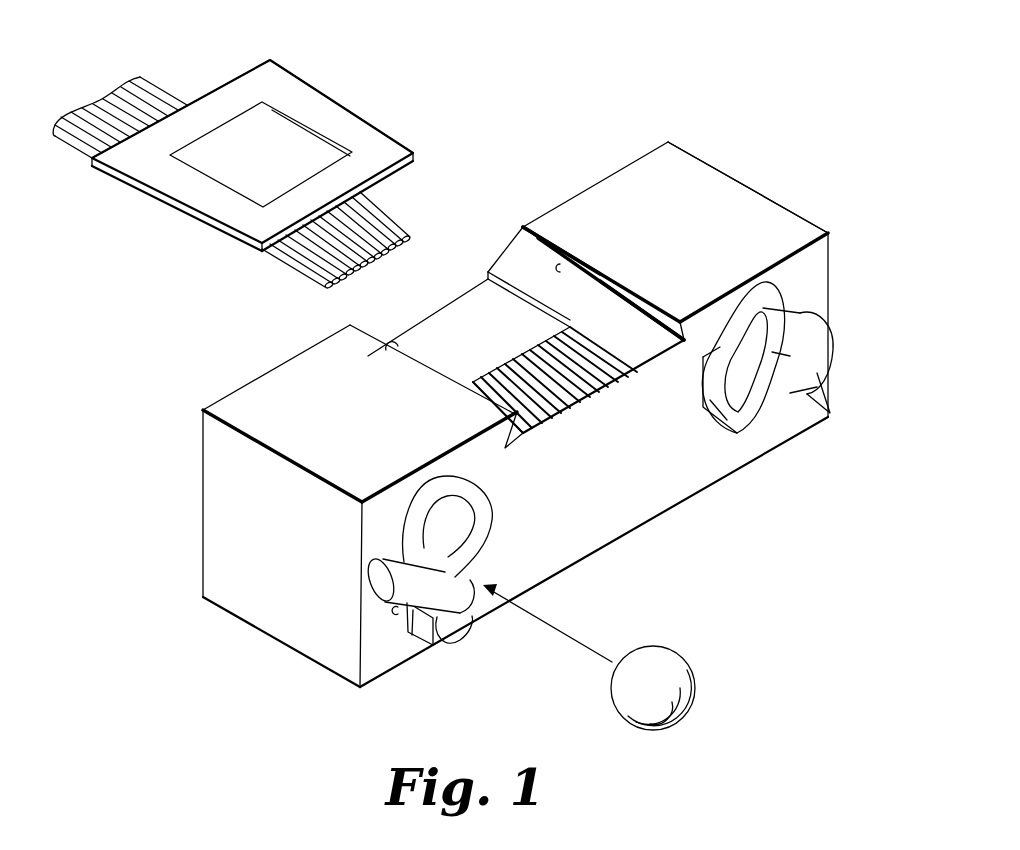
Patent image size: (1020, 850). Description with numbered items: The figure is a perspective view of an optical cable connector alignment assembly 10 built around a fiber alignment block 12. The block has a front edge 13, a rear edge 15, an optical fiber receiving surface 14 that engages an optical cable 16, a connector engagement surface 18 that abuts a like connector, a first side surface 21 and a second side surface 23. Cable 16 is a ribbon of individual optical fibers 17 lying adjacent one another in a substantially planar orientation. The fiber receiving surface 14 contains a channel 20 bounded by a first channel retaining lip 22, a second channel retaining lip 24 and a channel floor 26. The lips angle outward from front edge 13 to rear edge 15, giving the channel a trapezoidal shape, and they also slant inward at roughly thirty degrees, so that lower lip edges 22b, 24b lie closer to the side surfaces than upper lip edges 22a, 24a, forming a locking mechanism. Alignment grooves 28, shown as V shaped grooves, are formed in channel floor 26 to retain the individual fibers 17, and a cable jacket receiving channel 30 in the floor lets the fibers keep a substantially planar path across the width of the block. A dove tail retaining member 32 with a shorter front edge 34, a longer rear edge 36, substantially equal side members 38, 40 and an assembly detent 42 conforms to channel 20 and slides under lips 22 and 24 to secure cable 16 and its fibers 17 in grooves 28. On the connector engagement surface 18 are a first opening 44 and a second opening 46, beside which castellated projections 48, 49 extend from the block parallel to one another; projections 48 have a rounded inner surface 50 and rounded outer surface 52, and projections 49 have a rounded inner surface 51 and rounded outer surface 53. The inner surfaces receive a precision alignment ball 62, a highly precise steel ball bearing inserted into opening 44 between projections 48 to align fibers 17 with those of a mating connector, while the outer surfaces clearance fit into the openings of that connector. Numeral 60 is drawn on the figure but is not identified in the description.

The optical cable connector alignment assembly 10 is at (670, 70).
The fiber alignment block 12 is at (625, 421).
The front edge 13 is at (818, 262).
The optical fiber receiving surface 14 is at (391, 506).
The rear edge 15 is at (607, 177).
The optical cable 16 is at (150, 87).
The individual optical fibers 17 is at (408, 245).
The connector engagement surface 18 is at (643, 498).
The channel 20 is at (514, 256).
The first side surface 21 is at (255, 603).
The first channel retaining lip 22 is at (610, 292).
The upper lip edge 22a is at (648, 298).
The lower lip edge 22b is at (561, 270).
The second side surface 23 is at (800, 213).
The second channel retaining lip 24 is at (366, 358).
The upper lip edge 24a is at (420, 365).
The lower lip edge 24b is at (522, 430).
The channel floor 26 is at (535, 277).
The alignment grooves 28 is at (594, 366).
The cable jacket receiving channel 30 is at (497, 334).
The dove tail retaining member 32 is at (265, 146).
The front edge 34 is at (404, 172).
The rear edge 36 is at (208, 82).
The side member 38 is at (190, 212).
The side member 40 is at (347, 108).
The assembly detent 42 is at (243, 172).
The first opening 44 is at (445, 603).
The second opening 46 is at (801, 401).
The castellated projections 48 is at (465, 628).
The castellated projections 49 is at (820, 378).
The rounded inner surface 50 is at (470, 608).
The rounded inner surface 51 is at (798, 376).
The rounded outer surface 52 is at (417, 636).
The rounded outer surface 53 is at (805, 320).
The clip base 60 is at (753, 440).
The precision alignment ball 62 is at (672, 657).